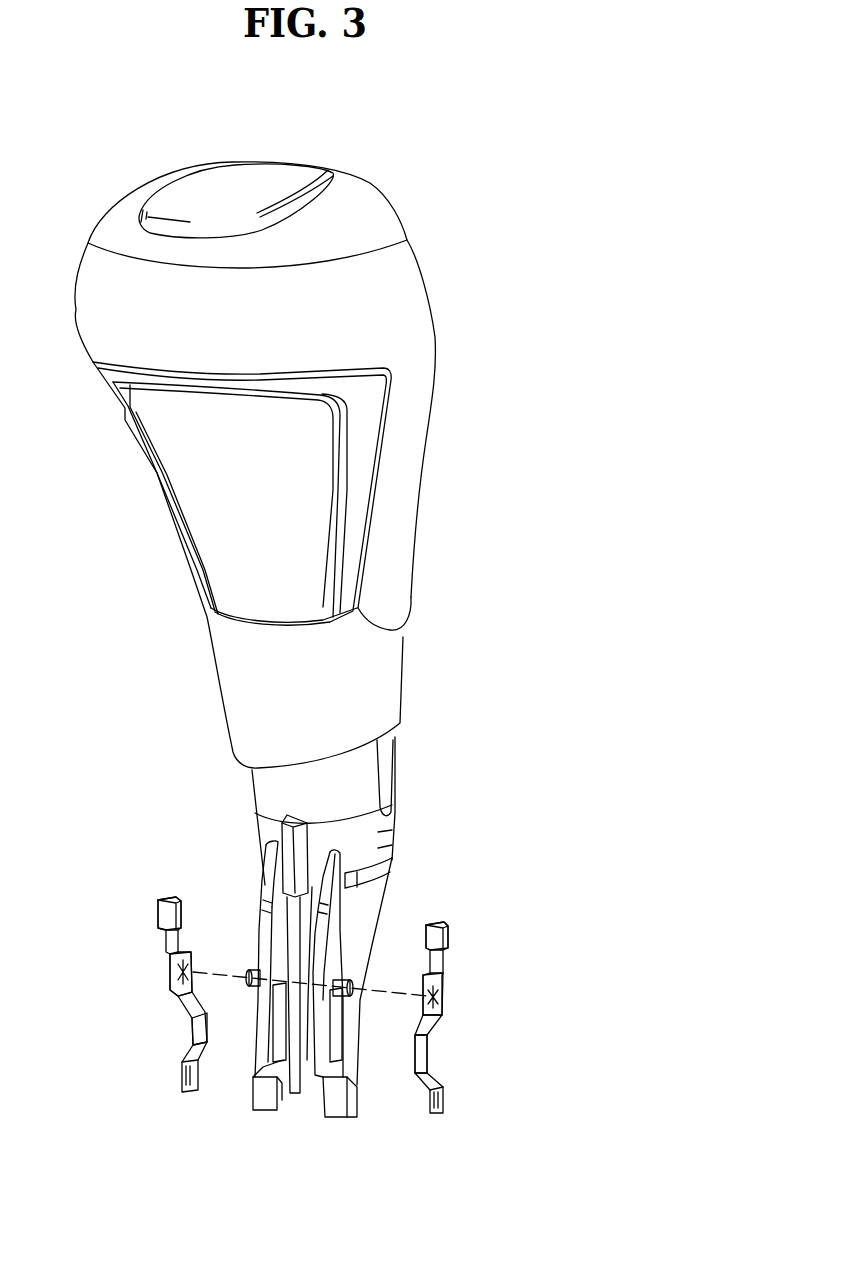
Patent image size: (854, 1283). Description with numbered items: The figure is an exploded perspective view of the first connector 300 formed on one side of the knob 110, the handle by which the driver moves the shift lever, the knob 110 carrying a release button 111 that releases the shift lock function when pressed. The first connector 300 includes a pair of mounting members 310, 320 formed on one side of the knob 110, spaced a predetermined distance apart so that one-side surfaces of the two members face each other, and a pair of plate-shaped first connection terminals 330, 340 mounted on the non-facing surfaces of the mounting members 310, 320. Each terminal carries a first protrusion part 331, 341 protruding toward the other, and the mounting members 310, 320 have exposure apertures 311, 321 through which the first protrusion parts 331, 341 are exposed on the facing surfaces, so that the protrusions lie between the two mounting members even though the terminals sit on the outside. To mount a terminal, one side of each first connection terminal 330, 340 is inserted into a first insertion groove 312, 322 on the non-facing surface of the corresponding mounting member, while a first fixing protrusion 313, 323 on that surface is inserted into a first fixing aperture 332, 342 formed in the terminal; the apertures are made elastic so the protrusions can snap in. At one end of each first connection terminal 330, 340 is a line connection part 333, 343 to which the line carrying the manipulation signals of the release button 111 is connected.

The knob 110 is at (410, 455).
The release button 111 is at (183, 478).
The first connector 300 is at (200, 1118).
The mounting member 310 is at (340, 930).
The exposure aperture 311 is at (340, 1050).
The first insertion groove 312 is at (352, 1100).
The first fixing protrusion 313 is at (345, 973).
The mounting member 320 is at (275, 912).
The exposure aperture 321 is at (283, 1028).
The first insertion groove 322 is at (263, 1110).
The first fixing protrusion 323 is at (253, 977).
The first connection terminal 330 is at (447, 1095).
The first protrusion part 331 is at (427, 1045).
The first fixing aperture 332 is at (443, 993).
The line connection part 333 is at (448, 935).
The first connection terminal 340 is at (182, 1080).
The first protrusion part 341 is at (197, 1030).
The first fixing aperture 342 is at (170, 972).
The line connection part 343 is at (157, 912).